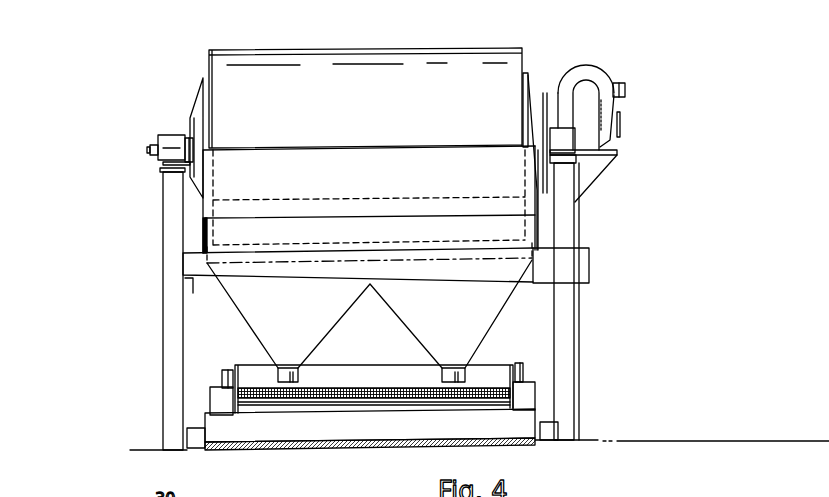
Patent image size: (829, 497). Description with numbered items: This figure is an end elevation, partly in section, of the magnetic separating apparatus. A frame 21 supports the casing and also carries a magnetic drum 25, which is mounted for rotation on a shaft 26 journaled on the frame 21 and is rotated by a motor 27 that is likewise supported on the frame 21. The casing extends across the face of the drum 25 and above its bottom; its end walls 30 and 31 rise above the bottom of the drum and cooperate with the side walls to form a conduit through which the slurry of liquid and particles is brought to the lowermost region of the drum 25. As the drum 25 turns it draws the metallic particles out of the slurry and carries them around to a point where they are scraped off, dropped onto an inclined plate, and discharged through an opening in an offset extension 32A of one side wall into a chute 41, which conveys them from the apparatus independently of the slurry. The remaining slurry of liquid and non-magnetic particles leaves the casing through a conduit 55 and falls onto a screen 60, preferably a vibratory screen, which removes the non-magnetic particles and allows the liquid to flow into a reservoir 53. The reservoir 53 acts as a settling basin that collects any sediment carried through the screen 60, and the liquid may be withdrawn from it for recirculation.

The frame 21 is at (163, 312).
The magnetic drum 25 is at (457, 50).
The shaft 26 is at (150, 147).
The motor 27 is at (608, 76).
The end wall 30 is at (204, 233).
The end wall 31 is at (536, 228).
The offset extension of the wall 32A is at (222, 189).
The chute 41 is at (591, 272).
The reservoir 53 is at (215, 386).
The conduit 55 is at (324, 341).
The screen 60 is at (377, 384).